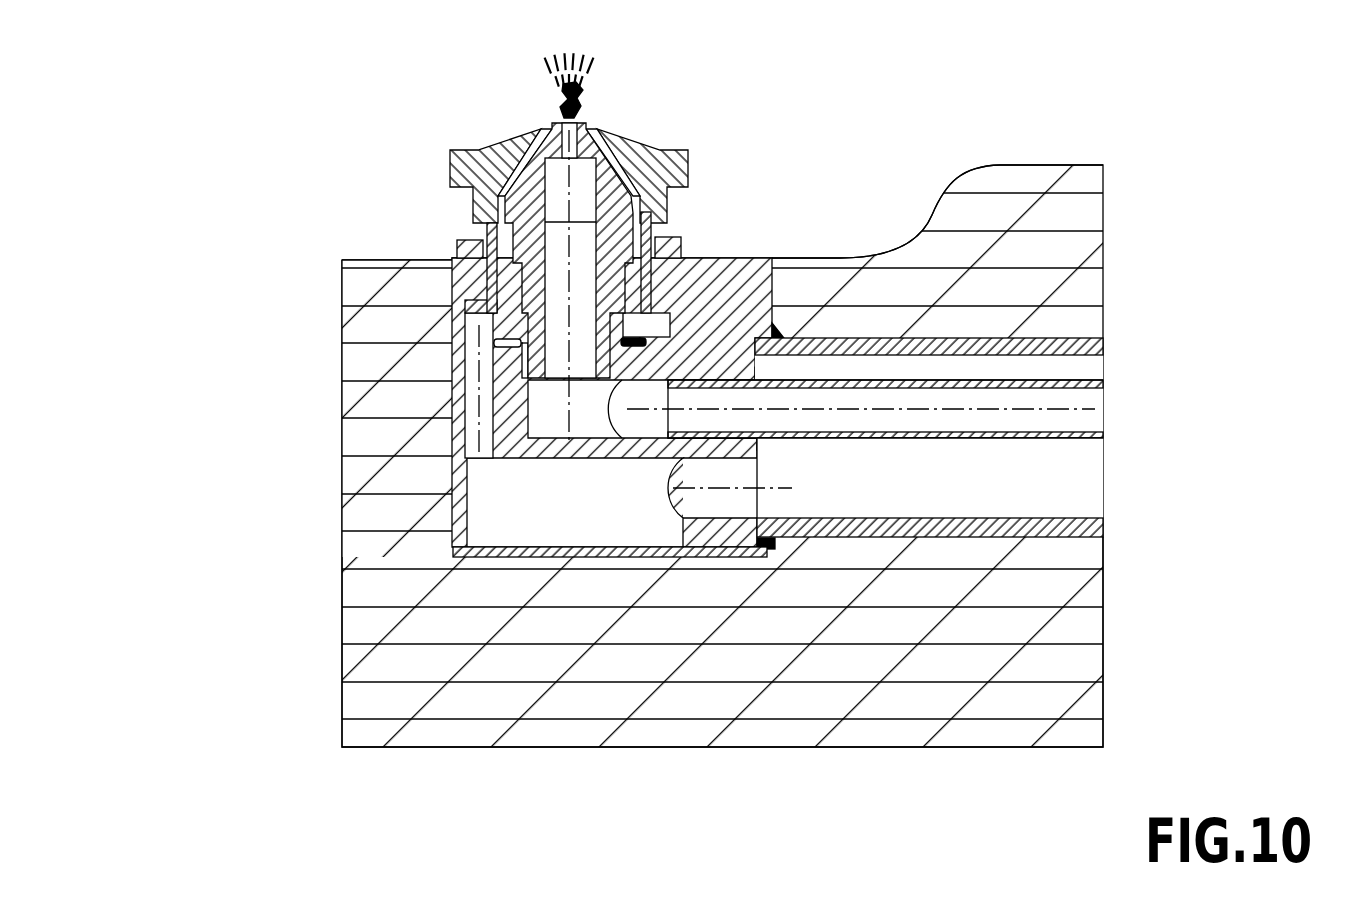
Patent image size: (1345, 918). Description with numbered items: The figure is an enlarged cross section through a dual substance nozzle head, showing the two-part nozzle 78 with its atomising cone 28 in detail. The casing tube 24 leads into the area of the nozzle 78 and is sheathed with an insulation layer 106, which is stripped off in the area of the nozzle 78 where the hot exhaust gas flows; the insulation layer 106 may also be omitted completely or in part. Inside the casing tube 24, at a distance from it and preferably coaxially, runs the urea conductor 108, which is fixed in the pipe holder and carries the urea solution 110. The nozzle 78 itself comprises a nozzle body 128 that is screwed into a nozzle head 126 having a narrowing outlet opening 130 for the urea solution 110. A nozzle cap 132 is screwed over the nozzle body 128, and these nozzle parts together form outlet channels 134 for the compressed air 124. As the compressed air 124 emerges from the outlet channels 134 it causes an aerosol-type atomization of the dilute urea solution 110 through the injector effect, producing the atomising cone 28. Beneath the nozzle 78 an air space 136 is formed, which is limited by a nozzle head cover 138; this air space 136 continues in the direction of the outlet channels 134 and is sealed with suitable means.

The casing tube 24 is at (1100, 527).
The atomising cone 28 is at (579, 83).
The nozzle 78 is at (521, 245).
The insulation layer 106 is at (1080, 623).
The urea conductor 108 is at (1100, 382).
The urea solution 110 is at (1095, 411).
The compressed air 124 is at (1085, 478).
The nozzle head 126 is at (727, 275).
The nozzle body 128 is at (535, 288).
The outlet opening 130 is at (548, 130).
The nozzle cap 132 is at (452, 167).
The outlet channels 134 is at (527, 197).
The air space 136 is at (587, 517).
The nozzle head cover 138 is at (532, 557).